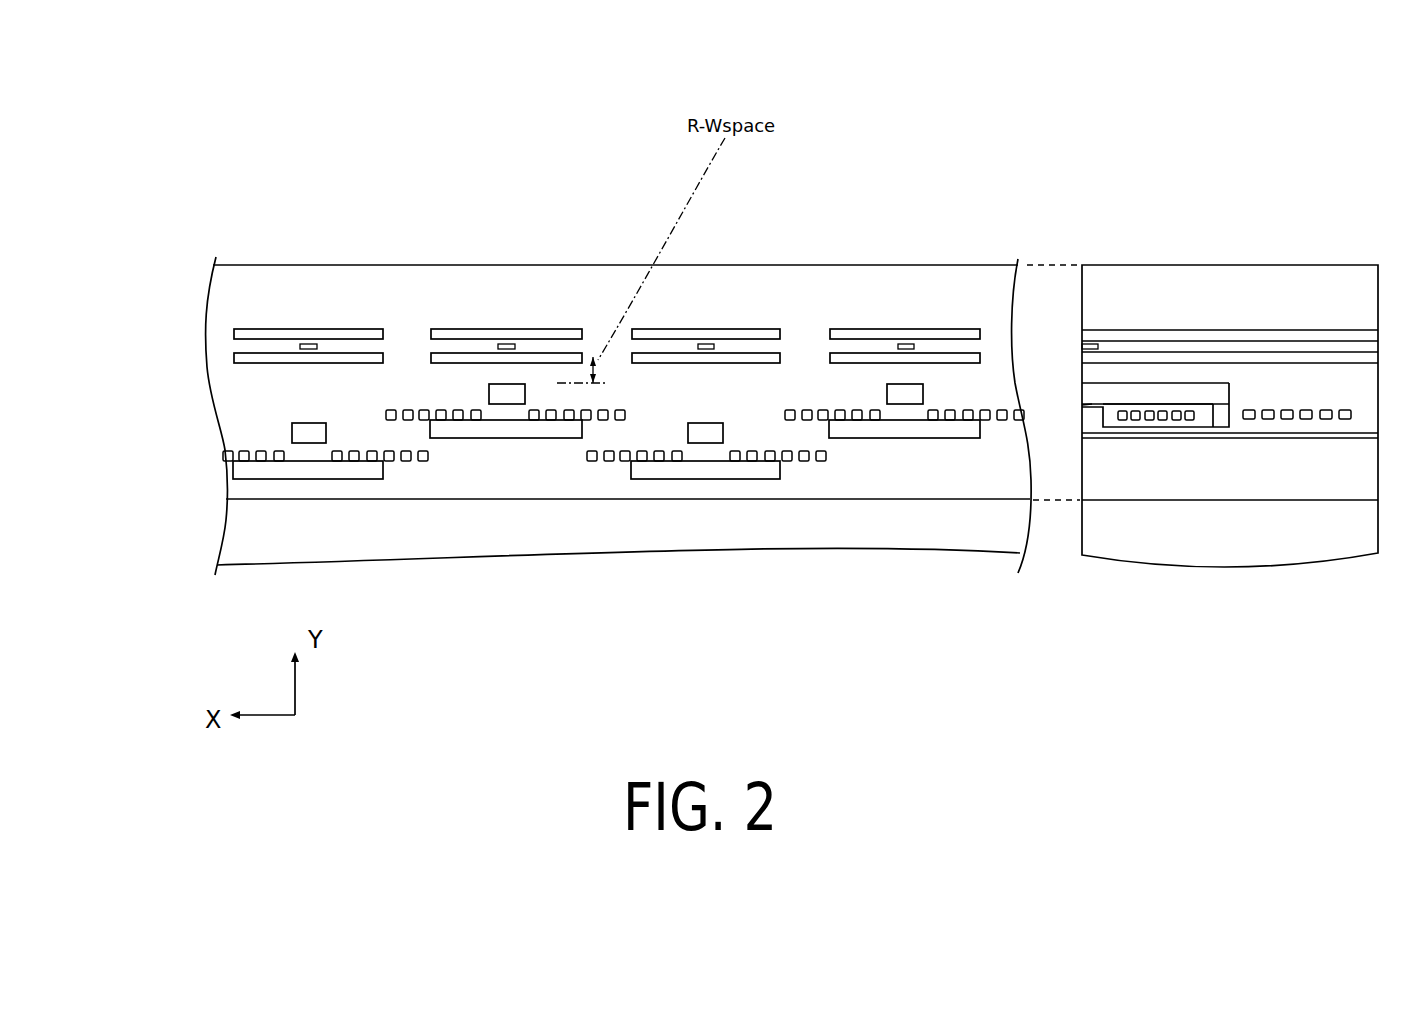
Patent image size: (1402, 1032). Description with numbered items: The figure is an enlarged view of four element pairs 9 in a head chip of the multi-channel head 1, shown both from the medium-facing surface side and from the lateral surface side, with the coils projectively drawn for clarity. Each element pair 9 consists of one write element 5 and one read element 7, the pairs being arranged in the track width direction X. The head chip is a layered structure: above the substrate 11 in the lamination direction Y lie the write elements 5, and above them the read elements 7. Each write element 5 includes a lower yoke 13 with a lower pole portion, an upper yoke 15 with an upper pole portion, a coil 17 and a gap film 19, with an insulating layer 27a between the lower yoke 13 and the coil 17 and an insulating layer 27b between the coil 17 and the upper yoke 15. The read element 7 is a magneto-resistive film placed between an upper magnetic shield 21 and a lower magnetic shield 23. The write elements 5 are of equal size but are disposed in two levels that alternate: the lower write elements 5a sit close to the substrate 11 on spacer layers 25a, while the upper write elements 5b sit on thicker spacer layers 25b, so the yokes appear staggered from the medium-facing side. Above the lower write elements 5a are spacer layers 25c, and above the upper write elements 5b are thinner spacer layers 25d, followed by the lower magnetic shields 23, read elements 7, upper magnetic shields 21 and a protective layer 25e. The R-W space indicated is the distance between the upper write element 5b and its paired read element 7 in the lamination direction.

The multi-channel head 1 is at (414, 260).
The write element 5 is at (1250, 385).
The lower write element 5a is at (340, 434).
The upper write element 5b is at (547, 385).
The read element 7 is at (300, 344).
The element pair 9 is at (1000, 290).
The substrate 11 is at (652, 556).
The lower yoke 13 is at (228, 470).
The upper yoke 15 is at (303, 423).
The coil 17 is at (400, 408).
The gap film 19 is at (297, 443).
The upper magnetic shield 21 is at (250, 327).
The lower magnetic shield 23 is at (233, 353).
The spacer layer 25a is at (310, 485).
The spacer layer 25b is at (525, 485).
The spacer layer 25c is at (310, 390).
The spacer layer 25d is at (497, 373).
The protective layer 25e is at (833, 296).
The insulating layer 27a is at (1185, 423).
The insulating layer 27b is at (1138, 403).